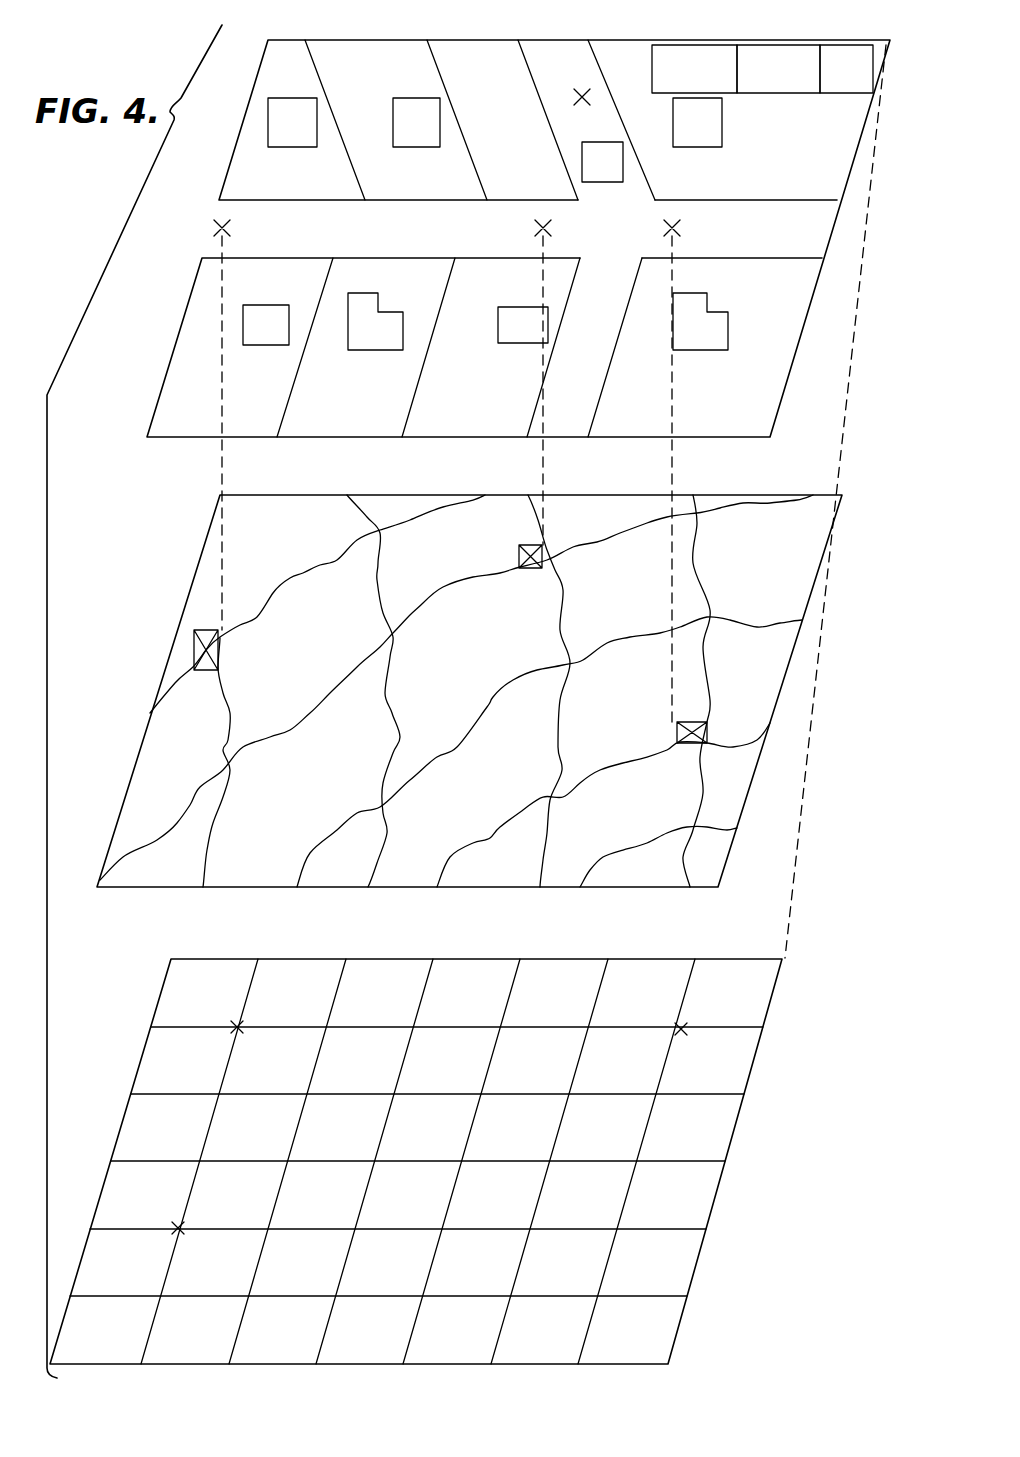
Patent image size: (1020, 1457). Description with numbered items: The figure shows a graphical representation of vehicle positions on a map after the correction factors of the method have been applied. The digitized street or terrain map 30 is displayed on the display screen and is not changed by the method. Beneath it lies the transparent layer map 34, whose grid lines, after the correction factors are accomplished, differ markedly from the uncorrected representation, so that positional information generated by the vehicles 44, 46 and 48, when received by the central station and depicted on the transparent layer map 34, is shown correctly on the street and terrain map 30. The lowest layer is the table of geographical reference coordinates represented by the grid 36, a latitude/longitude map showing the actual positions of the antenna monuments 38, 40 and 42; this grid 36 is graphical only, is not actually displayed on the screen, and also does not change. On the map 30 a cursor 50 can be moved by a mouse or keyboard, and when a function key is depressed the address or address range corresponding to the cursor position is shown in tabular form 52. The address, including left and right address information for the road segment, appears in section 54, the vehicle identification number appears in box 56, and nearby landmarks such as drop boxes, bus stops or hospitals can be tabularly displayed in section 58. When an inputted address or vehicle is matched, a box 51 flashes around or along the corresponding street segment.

The street or terrain map 30 is at (222, 202).
The transparent layer map 34 is at (170, 647).
The table of geographical reference coordinates 36 is at (160, 996).
The antenna monument 38 is at (684, 1027).
The antenna monument 40 is at (181, 1226).
The antenna monument 42 is at (240, 1026).
The vehicle 44 is at (217, 631).
The vehicle 46 is at (519, 552).
The vehicle 48 is at (677, 732).
The cursor 50 is at (583, 90).
The box 51 is at (602, 162).
The tabular display 52 is at (652, 50).
The address section 54 is at (690, 55).
The vehicle identification box 56 is at (770, 55).
The landmark section 58 is at (830, 55).